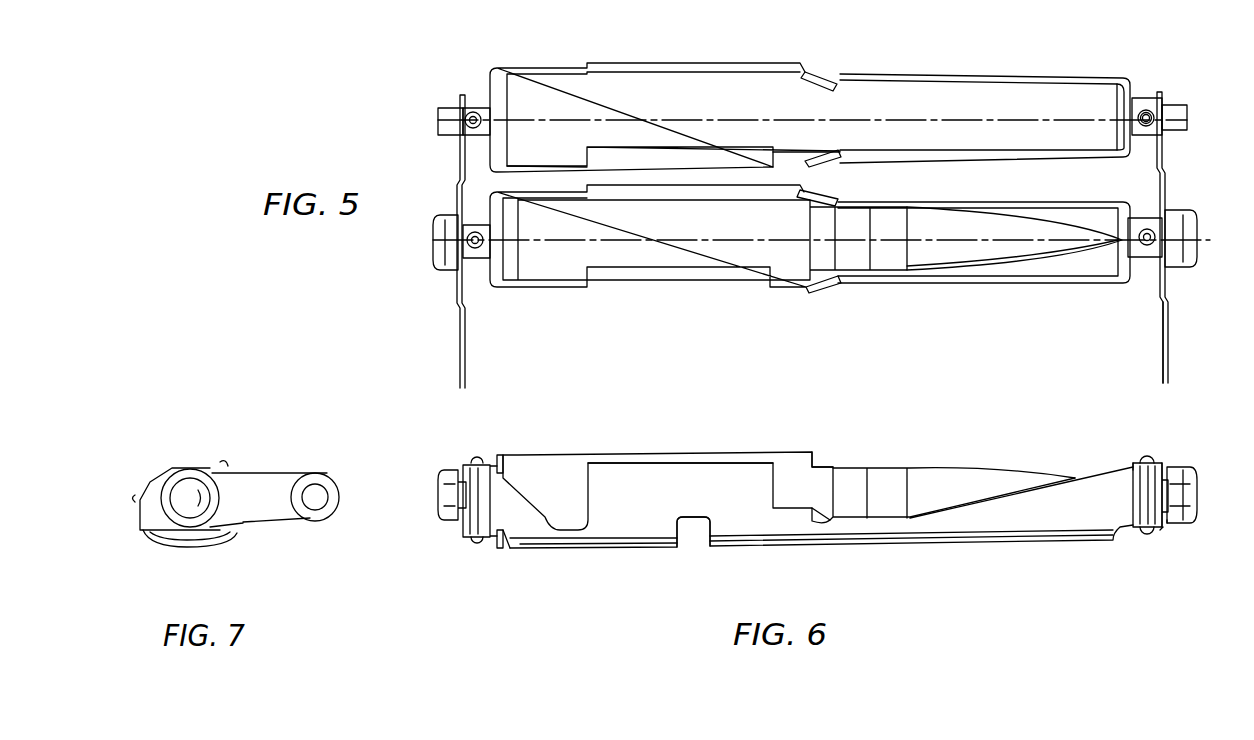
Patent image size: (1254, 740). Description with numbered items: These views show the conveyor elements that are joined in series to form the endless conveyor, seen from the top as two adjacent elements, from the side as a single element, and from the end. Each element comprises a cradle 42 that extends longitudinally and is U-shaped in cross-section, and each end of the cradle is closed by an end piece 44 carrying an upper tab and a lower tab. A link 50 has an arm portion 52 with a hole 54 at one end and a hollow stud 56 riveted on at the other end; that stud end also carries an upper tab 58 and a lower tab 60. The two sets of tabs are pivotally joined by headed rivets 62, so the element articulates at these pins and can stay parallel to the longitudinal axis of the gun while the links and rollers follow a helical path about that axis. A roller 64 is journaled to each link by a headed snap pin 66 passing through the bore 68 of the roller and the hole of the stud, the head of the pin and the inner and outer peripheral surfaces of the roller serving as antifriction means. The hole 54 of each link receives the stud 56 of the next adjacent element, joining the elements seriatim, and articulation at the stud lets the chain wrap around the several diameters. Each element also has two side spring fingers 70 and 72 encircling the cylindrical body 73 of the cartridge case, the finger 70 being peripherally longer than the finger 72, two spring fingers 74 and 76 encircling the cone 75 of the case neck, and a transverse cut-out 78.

In FIG. 6, the cradle 42 is at (883, 545).
In FIG. 5, the end piece 44 is at (492, 277).
In FIG. 6, the end piece 44 is at (1130, 493).
In FIG. 5, the link 50 is at (1179, 358).
In FIG. 5, the arm portion 52 is at (1170, 166).
In FIG. 7, the arm portion 52 is at (255, 480).
In FIG. 5, the hole 54 is at (1175, 112).
In FIG. 7, the hole 54 is at (312, 510).
In FIG. 5, the hollow stud 56 is at (1168, 125).
In FIG. 6, the hollow stud 56 is at (446, 483).
In FIG. 6, the upper tab 58 is at (1160, 470).
In FIG. 7, the upper tab 58 is at (178, 465).
In FIG. 6, the lower tab 60 is at (1165, 532).
In FIG. 7, the lower tab 60 is at (180, 540).
In FIG. 5, the headed rivet 62 is at (1146, 105).
In FIG. 6, the headed rivet 62 is at (1145, 460).
In FIG. 7, the headed rivet 62 is at (192, 465).
In FIG. 6, the roller 64 is at (1188, 470).
In FIG. 6, the headed snap pin 66 is at (1196, 495).
In FIG. 6, the bore 68 is at (1188, 528).
In FIG. 5, the side spring finger 70 is at (680, 284).
In FIG. 6, the side spring finger 70 is at (682, 496).
In FIG. 5, the side spring finger 72 is at (735, 62).
In FIG. 5, the cylindrical body 73 is at (680, 236).
In FIG. 5, the spring finger 74 is at (825, 165).
In FIG. 6, the spring finger 74 is at (816, 510).
In FIG. 6, the cone 75 is at (820, 465).
In FIG. 5, the spring finger 76 is at (822, 72).
In FIG. 6, the transverse cut-out 78 is at (683, 545).